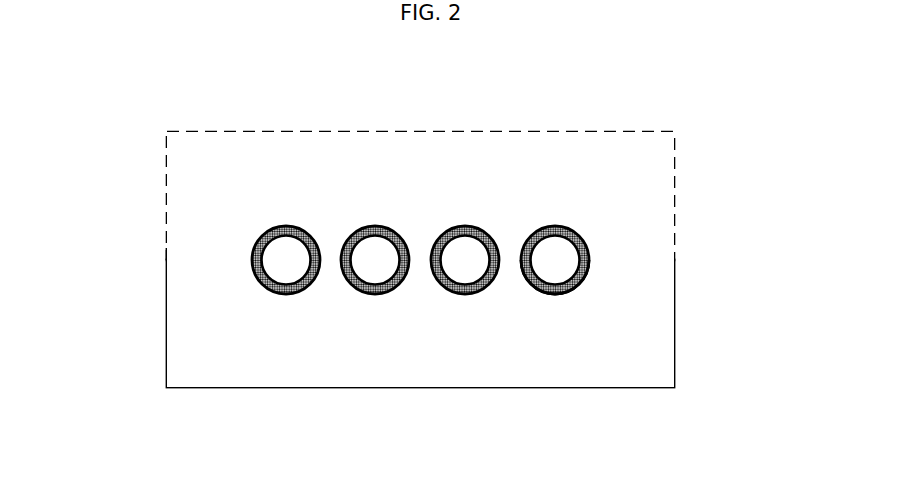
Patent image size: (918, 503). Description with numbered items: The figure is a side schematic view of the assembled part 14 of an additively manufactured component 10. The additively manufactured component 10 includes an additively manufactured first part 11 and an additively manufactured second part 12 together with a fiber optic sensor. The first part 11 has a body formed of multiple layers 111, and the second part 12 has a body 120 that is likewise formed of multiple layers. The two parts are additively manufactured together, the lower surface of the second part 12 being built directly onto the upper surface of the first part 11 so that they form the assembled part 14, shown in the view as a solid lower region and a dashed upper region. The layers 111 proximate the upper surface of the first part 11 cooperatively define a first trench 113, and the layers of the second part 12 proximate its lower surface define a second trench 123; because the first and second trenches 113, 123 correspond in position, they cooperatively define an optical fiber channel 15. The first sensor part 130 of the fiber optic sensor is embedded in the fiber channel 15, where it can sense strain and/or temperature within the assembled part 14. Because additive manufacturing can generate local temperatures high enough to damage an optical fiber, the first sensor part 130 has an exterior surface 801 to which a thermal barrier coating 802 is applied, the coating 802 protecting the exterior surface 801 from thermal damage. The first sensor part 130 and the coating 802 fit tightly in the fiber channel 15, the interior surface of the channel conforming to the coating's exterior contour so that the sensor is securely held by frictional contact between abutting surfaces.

The additively manufactured component 10 is at (704, 120).
The additively manufactured first part 11 is at (187, 325).
The additively manufactured second part 12 is at (182, 196).
The assembled part 14 is at (160, 125).
The optical fiber channel 15 is at (532, 298).
The multiple layers 111 is at (287, 352).
The first trench 113 is at (302, 285).
The body 120 is at (287, 196).
The second trench 123 is at (307, 232).
The first sensor part 130 is at (558, 256).
The exterior surface 801 is at (585, 273).
The thermal barrier coating 802 is at (561, 290).